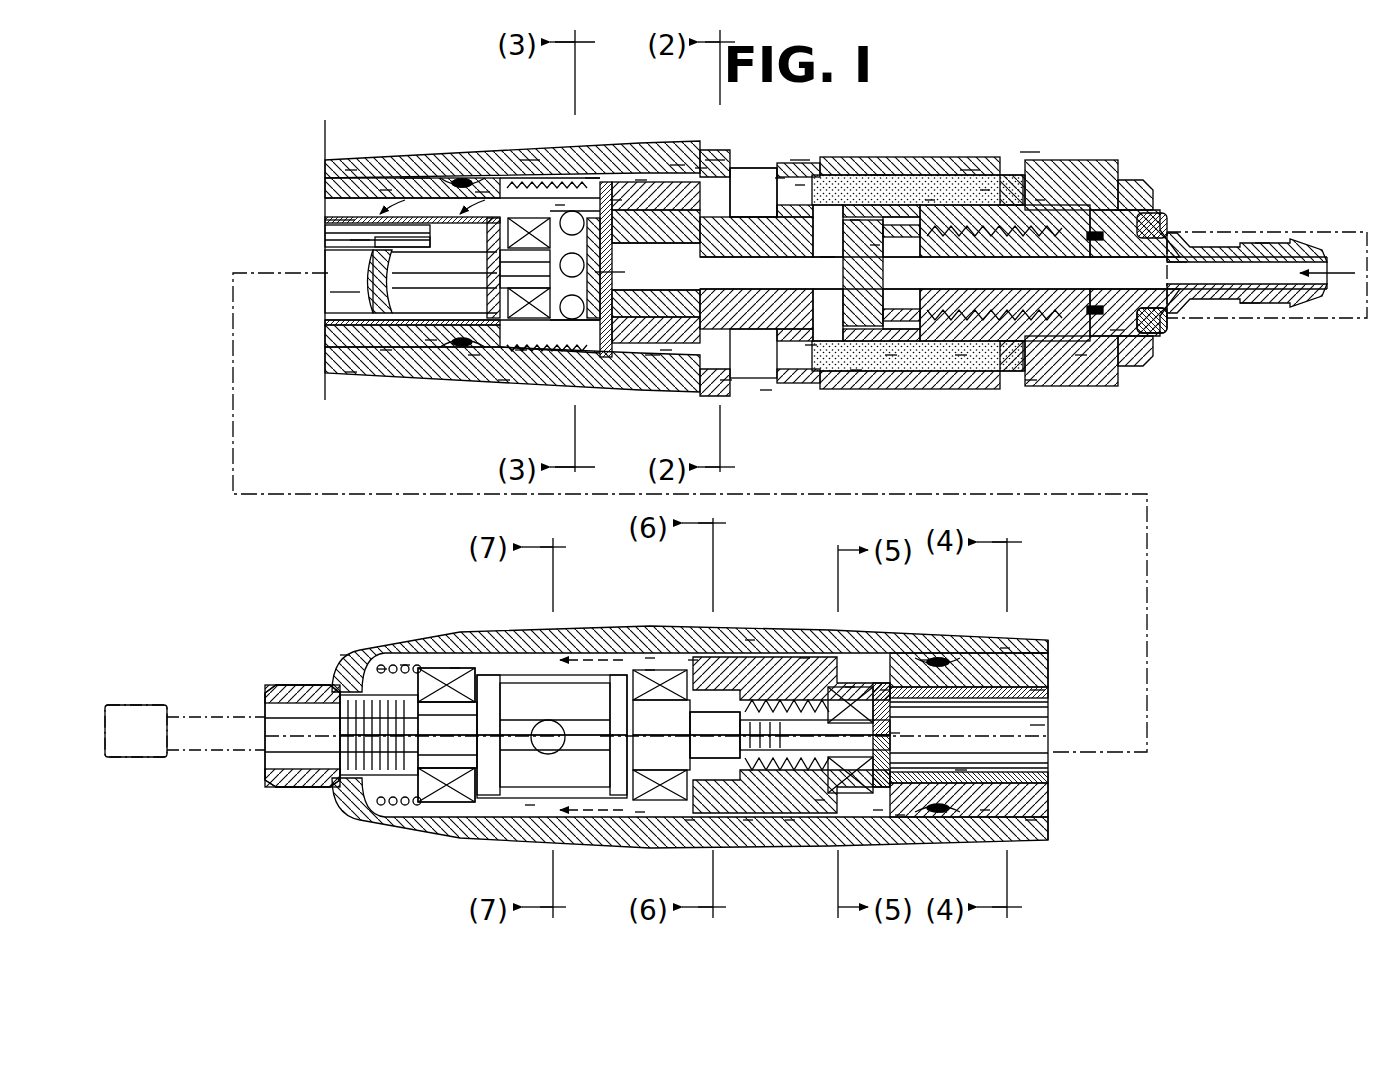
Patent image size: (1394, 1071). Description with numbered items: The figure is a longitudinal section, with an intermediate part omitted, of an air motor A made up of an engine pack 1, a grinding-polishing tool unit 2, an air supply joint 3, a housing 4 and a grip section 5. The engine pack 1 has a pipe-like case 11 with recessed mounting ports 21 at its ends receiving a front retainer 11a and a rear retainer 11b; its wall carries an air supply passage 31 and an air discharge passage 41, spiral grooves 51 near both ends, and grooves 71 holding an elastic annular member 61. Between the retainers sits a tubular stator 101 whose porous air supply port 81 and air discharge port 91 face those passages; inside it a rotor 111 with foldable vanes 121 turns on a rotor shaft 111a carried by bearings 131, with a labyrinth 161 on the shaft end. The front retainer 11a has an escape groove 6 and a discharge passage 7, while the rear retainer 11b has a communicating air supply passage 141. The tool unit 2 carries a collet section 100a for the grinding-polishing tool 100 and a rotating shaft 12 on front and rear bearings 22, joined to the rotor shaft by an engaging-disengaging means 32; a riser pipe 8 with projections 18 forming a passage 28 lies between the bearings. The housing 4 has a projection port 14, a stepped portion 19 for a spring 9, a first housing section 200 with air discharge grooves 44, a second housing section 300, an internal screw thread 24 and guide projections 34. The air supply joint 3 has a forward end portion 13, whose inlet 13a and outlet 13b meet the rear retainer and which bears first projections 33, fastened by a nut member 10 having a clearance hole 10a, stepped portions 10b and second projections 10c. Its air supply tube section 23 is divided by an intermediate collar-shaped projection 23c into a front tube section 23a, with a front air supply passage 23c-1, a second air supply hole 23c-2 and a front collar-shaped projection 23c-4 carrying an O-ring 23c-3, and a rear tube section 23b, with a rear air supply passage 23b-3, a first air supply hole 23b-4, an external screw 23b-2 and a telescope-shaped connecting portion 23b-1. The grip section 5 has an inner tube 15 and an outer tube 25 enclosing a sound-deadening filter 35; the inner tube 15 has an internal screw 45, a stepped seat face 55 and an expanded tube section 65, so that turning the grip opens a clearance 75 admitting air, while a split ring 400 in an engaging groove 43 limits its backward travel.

The engine pack 1 is at (350, 170).
The grinding-polishing tool unit 2 is at (530, 800).
The air supply joint 3 is at (1258, 303).
The housing 4 is at (385, 190).
The grip section 5 is at (985, 190).
The escape groove 6 is at (850, 687).
The discharge passage 7 is at (878, 810).
The riser pipe 8 is at (748, 817).
The spring 9 is at (405, 665).
The nut member 10 is at (715, 160).
The clearance hole 10a is at (753, 192).
The stepped portions 10b is at (726, 380).
The second projections 10c is at (700, 170).
The pipe-like case 11 is at (350, 372).
The front retainer 11a is at (885, 690).
The rear retainer 11b is at (528, 160).
The rotating shaft 12 is at (650, 670).
The forward end portion 13 is at (578, 352).
The spring seat 13a is at (595, 272).
The spring end 13b is at (640, 180).
The projection port 14 is at (350, 672).
The inner tube 15 is at (930, 200).
The projections 18 is at (692, 660).
The stepped portion 19 is at (380, 665).
The mounting ports 21 is at (615, 200).
The bearings 22 is at (650, 658).
The air supply tube section 23 is at (1040, 200).
The front tube section 23a is at (800, 185).
The rear tube section 23b is at (1118, 333).
The telescope-shaped connecting portion 23b-1 is at (1266, 243).
The external screw 23b-2 is at (1082, 355).
The rear air supply passage 23b-3 is at (1032, 380).
The first air supply hole 23b-4 is at (962, 355).
The intermediate collar-shaped projection 23c is at (880, 175).
The front air supply passage 23c-1 is at (766, 390).
The second air supply hole 23c-2 is at (825, 258).
The O-ring 23c-3 is at (800, 160).
The front collar-shaped projection 23c-4 is at (812, 345).
The internal screw thread 24 is at (780, 178).
The outer tube 25 is at (970, 170).
The passage 28 is at (690, 817).
The air supply passage 31 is at (455, 180).
The engaging-disengaging means 32 is at (726, 712).
The first projections 33 is at (666, 350).
The guide projections 34 is at (676, 165).
The sound-deadening filter 35 is at (856, 370).
The air discharge passage 41 is at (428, 340).
The engaging groove 43 is at (1168, 322).
The air discharge grooves 44 is at (620, 670).
The internal screw 45 is at (1120, 210).
The spiral grooves 51 is at (520, 350).
The stepped seat face 55 is at (876, 245).
The elastic annular member 61 is at (482, 192).
The expanded tube section 65 is at (855, 220).
The grooves 71 is at (472, 355).
The clearance 75 is at (892, 355).
The air supply port 81 is at (412, 177).
The air discharge port 91 is at (900, 815).
The grinding-polishing tool 100 is at (160, 705).
The collet section 100a is at (314, 782).
The tubular stator 101 is at (386, 350).
The conductor tube 111 is at (332, 296).
The rotor shaft 111a is at (502, 380).
The foldable vanes 121 is at (362, 256).
The bearings 131 is at (560, 205).
The communicating air supply passage 141 is at (590, 178).
The labyrinth 161 is at (750, 640).
The first housing section 200 is at (510, 675).
The second housing section 300 is at (332, 228).
The split ring 400 is at (1205, 203).
The air motor A is at (1028, 150).